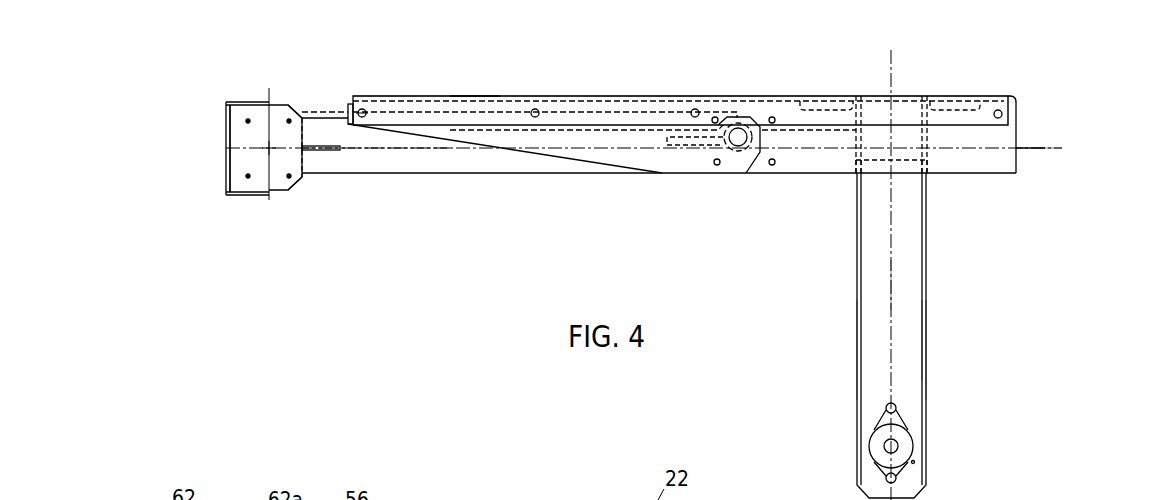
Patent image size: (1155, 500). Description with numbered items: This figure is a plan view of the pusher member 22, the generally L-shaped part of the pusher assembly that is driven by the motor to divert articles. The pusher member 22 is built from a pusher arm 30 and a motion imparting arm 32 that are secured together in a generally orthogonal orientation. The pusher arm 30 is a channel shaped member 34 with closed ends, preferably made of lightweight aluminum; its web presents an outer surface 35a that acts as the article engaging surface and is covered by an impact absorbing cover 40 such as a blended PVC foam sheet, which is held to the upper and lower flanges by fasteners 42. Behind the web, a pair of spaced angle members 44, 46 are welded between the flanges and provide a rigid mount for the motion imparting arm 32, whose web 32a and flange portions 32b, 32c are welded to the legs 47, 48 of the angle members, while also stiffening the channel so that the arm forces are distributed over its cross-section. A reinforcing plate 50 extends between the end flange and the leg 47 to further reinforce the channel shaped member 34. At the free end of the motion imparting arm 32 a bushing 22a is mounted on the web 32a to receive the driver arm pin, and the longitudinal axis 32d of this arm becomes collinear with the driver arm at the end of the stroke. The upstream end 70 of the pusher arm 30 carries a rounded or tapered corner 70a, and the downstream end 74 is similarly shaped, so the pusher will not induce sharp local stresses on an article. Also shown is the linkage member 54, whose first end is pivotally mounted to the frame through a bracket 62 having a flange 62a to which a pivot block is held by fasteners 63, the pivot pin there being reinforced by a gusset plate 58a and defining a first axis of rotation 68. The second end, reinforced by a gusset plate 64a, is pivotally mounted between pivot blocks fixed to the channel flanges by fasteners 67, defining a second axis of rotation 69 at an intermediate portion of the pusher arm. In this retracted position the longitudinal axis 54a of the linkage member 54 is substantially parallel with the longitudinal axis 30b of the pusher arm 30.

The pusher member 22 is at (651, 76).
The bushing 22a is at (915, 426).
The pusher arm 30 is at (1020, 148).
The longitudinal axis of pusher arm 30b is at (1040, 150).
The motion imparting arm 32 is at (926, 246).
The web 32a is at (915, 345).
The flange portion 32b is at (857, 374).
The flange portion 32c is at (928, 386).
The longitudinal axis of motion imparting arm 32d is at (893, 284).
The channel shaped member 34 is at (988, 168).
The outer surface 35a is at (459, 96).
The impact absorbing cover 40 is at (573, 96).
The fasteners 42 is at (366, 110).
The angle member 44 is at (816, 103).
The angle member 46 is at (928, 96).
The leg of angle member 47 is at (850, 163).
The leg of angle member 48 is at (933, 163).
The reinforcing plate 50 is at (536, 132).
The linkage member 54 is at (470, 175).
The longitudinal axis of linkage member 54a is at (362, 152).
The gusset plate 58a is at (328, 160).
The bracket 62 is at (243, 98).
The flange of bracket 62a is at (296, 170).
The fasteners 63 is at (287, 112).
The gusset plate 64a is at (683, 147).
The fasteners 67 is at (775, 165).
The first axis of rotation 68 is at (268, 148).
The second axis of rotation 69 is at (745, 146).
The upstream end 70 is at (1015, 87).
The rounded or tapered corner 70a is at (1013, 97).
The downstream end 74 is at (350, 106).